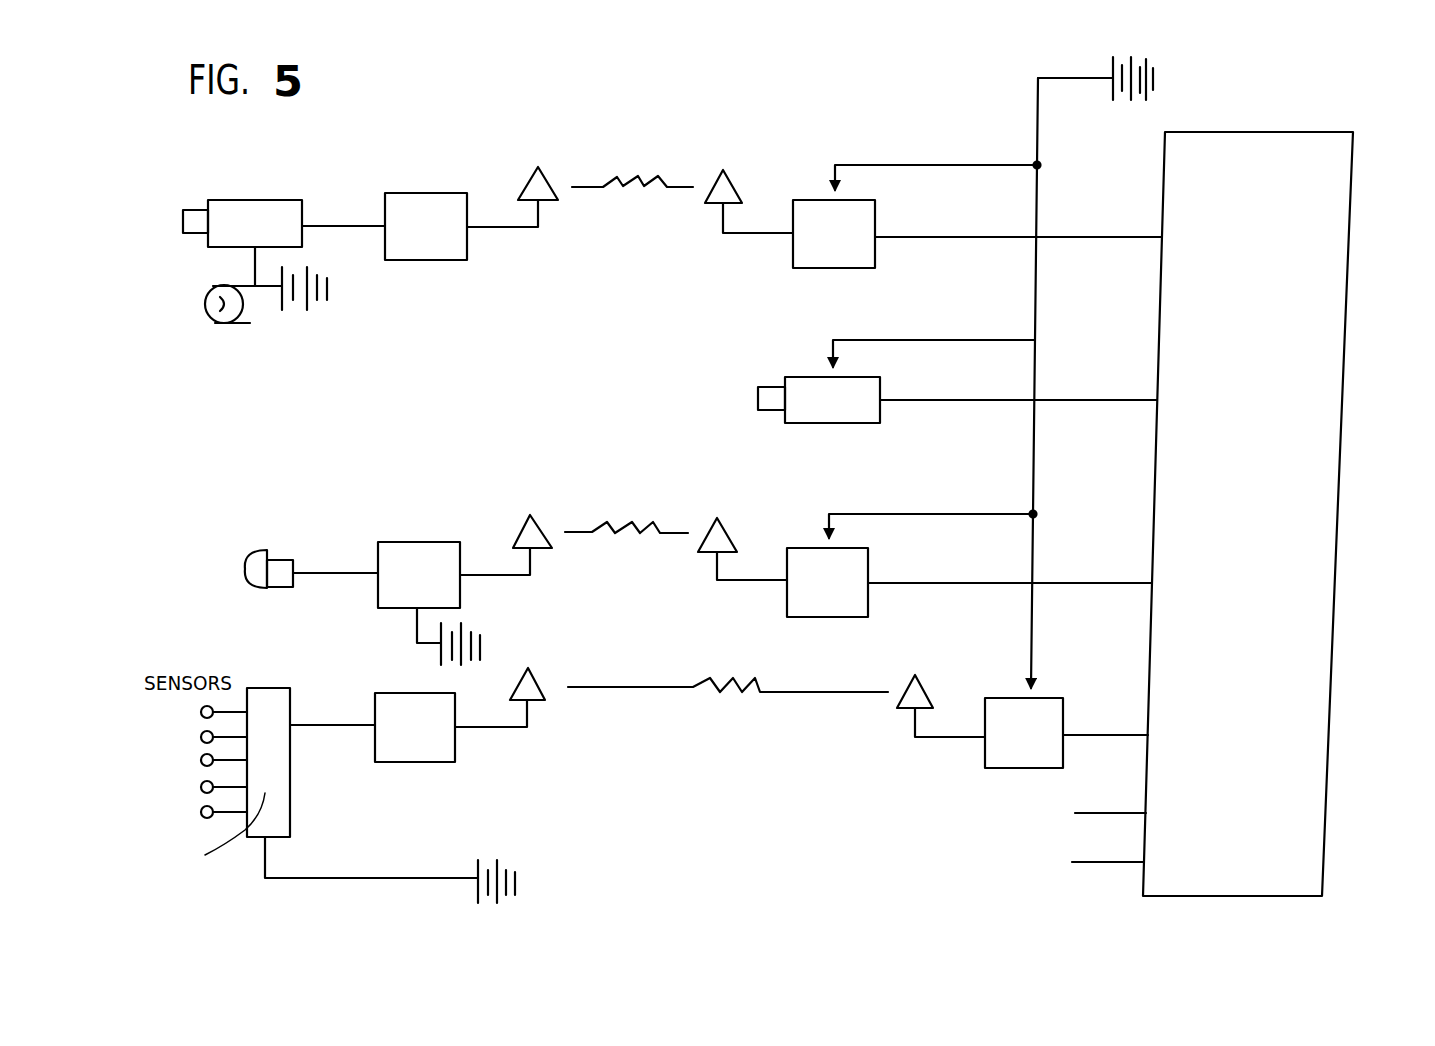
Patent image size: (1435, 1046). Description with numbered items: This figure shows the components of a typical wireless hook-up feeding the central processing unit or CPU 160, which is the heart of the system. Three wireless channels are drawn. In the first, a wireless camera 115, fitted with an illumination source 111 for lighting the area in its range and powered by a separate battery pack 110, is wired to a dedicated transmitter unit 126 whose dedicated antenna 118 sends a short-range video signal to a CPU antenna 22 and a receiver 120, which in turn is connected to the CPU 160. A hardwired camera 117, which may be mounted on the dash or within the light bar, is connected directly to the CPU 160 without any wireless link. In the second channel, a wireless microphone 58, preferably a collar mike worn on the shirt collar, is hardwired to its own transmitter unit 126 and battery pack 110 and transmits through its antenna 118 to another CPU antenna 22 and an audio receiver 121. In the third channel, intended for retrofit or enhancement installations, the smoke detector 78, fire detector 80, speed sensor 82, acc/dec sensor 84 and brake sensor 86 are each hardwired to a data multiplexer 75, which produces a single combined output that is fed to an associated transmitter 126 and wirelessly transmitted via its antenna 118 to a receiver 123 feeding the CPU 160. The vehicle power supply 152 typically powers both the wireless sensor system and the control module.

The central processing unit 160 is at (1354, 170).
The wireless camera 115 is at (255, 200).
The illumination source 111 is at (215, 318).
The battery pack 110 is at (300, 310).
The transmitter unit 126 is at (420, 200).
The dedicated antenna 118 is at (545, 178).
The CPU antenna 22 is at (735, 192).
The receiver 120 is at (876, 216).
The hardwired camera 117 is at (808, 377).
The audio receiver 121 is at (870, 563).
The receiver 123 is at (1045, 698).
The vehicle power supply 152 is at (1116, 100).
The wireless microphone 58 is at (270, 556).
The data multiplexer 75 is at (290, 800).
The smoke detector 78 is at (200, 712).
The fire detector 80 is at (200, 737).
The speed sensor 82 is at (200, 760).
The acc/dec sensor 84 is at (200, 787).
The brake sensor 86 is at (200, 812).